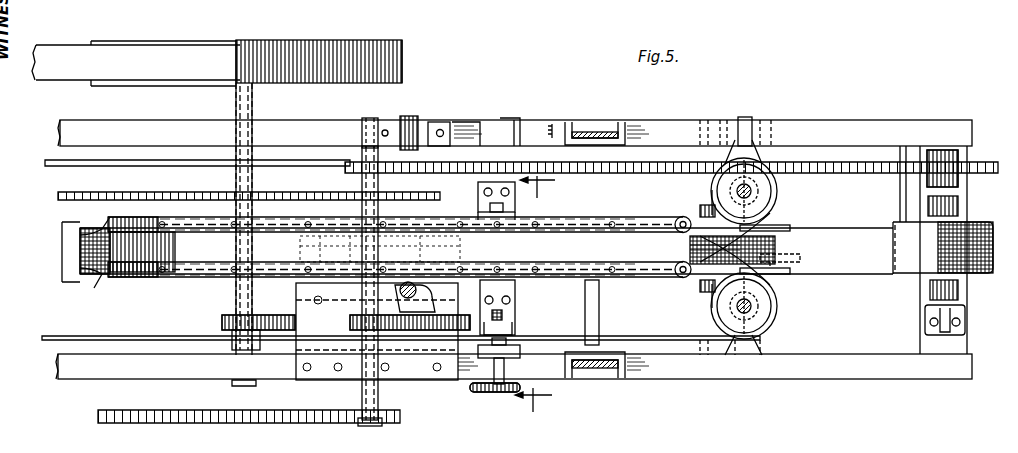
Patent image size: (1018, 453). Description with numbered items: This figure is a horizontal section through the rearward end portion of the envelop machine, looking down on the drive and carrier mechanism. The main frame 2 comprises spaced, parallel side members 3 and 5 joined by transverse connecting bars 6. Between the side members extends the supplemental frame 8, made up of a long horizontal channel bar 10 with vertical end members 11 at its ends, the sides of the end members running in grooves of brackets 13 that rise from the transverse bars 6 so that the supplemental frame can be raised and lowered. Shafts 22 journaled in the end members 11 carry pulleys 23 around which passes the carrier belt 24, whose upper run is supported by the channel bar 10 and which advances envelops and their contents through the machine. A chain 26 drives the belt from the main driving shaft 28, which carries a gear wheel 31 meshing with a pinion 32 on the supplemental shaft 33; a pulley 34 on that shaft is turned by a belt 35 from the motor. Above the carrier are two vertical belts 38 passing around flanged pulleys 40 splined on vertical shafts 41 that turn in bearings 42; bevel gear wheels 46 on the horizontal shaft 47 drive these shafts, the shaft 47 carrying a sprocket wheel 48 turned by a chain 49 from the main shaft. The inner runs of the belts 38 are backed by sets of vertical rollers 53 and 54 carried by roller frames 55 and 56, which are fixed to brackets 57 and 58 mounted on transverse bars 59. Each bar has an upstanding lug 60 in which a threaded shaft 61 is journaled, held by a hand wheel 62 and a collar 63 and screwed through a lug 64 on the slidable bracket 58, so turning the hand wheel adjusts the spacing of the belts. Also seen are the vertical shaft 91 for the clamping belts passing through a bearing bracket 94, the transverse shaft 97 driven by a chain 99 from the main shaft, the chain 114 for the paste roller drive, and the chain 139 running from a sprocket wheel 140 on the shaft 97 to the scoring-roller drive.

The main frame 2 is at (90, 374).
The side member 3 is at (886, 120).
The side member 5 is at (858, 378).
The transverse connecting bar 6 is at (980, 342).
The supplemental frame 8 is at (852, 274).
The channel bar 10 is at (62, 262).
The end member 11 is at (960, 204).
The bracket 13 is at (924, 318).
The shaft 22 is at (932, 146).
The pulley 23 is at (900, 224).
The belt 24 is at (80, 244).
The chain 26 is at (818, 166).
The main driving shaft 28 is at (363, 116).
The gear wheel 31 is at (280, 330).
The pinion 32 is at (222, 318).
The supplemental shaft 33 is at (254, 104).
The pulley 34 is at (146, 44).
The belt 35 is at (60, 46).
The vertical belt 38 is at (94, 222).
The pulley 40 is at (770, 192).
The vertical shaft 41 is at (752, 193).
The bearing 42 is at (716, 142).
The bevel gear wheel 46 is at (712, 196).
The horizontal shaft 47 is at (746, 118).
The sprocket wheel 48 is at (786, 264).
The chain 49 is at (664, 276).
The vertical roller 53 is at (160, 216).
The vertical roller 54 is at (164, 278).
The roller frame 55 is at (200, 216).
The roller frame 56 is at (178, 278).
The bracket 57 is at (514, 146).
The bracket 58 is at (516, 296).
The bar 59 is at (474, 146).
The lug 60 is at (512, 360).
The shaft 61 is at (504, 318).
The hand wheel 62 is at (486, 392).
The collar 63 is at (520, 352).
The lug 64 is at (516, 332).
The vertical shaft 91 is at (418, 290).
The bearing bracket 94 is at (330, 330).
The transverse shaft 97 is at (410, 116).
The chain 99 is at (340, 248).
The chain 114 is at (206, 422).
The chain 139 is at (136, 180).
The sprocket wheel 140 is at (478, 192).